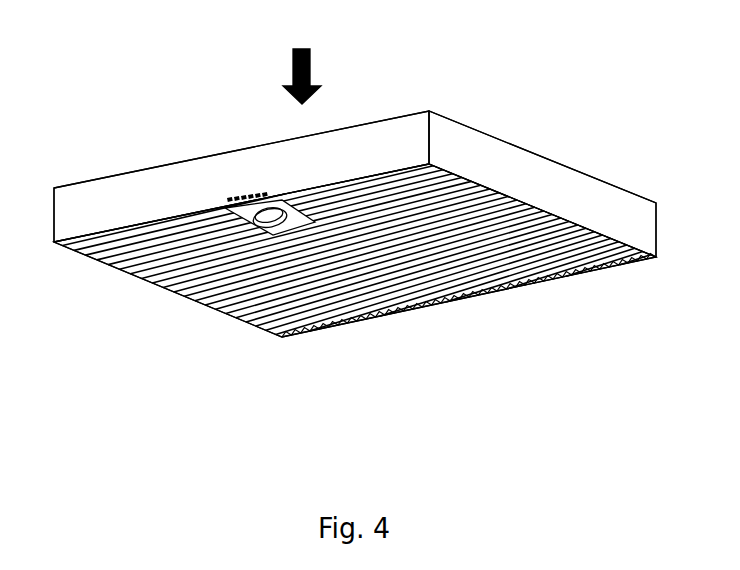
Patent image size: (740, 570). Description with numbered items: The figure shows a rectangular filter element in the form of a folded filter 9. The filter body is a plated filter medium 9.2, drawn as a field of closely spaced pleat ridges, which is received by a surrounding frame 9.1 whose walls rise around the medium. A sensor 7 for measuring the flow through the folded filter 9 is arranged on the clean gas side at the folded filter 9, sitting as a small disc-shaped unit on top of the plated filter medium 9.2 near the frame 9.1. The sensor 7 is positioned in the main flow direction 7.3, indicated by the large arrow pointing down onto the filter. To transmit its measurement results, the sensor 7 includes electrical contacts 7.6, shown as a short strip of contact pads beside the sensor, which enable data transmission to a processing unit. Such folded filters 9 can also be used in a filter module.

The sensor 7 is at (247, 215).
The main flow direction 7.3 is at (297, 60).
The electrical contacts 7.6 is at (240, 200).
The folded filter 9 is at (605, 154).
The frame 9.1 is at (122, 193).
The plated filter medium 9.2 is at (420, 235).